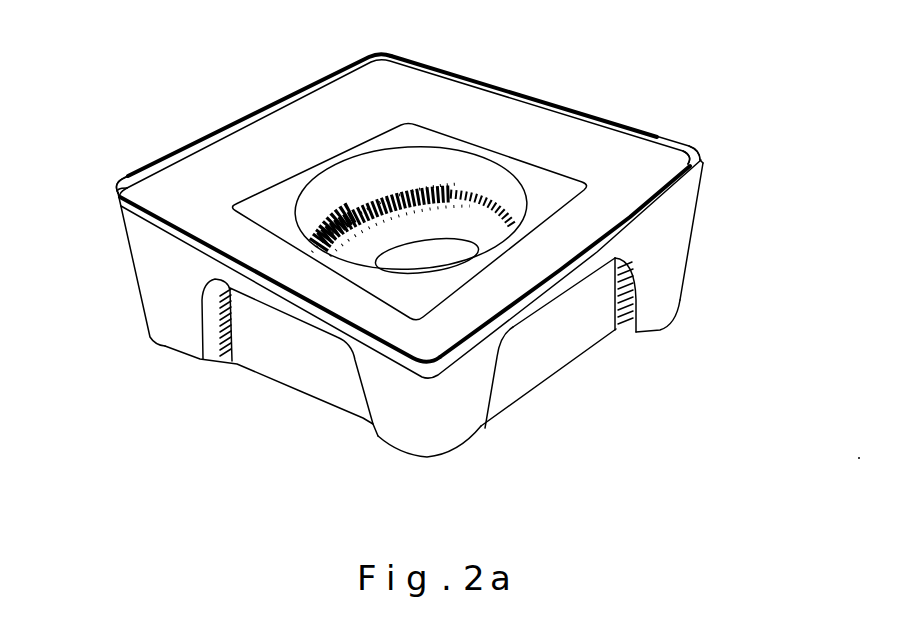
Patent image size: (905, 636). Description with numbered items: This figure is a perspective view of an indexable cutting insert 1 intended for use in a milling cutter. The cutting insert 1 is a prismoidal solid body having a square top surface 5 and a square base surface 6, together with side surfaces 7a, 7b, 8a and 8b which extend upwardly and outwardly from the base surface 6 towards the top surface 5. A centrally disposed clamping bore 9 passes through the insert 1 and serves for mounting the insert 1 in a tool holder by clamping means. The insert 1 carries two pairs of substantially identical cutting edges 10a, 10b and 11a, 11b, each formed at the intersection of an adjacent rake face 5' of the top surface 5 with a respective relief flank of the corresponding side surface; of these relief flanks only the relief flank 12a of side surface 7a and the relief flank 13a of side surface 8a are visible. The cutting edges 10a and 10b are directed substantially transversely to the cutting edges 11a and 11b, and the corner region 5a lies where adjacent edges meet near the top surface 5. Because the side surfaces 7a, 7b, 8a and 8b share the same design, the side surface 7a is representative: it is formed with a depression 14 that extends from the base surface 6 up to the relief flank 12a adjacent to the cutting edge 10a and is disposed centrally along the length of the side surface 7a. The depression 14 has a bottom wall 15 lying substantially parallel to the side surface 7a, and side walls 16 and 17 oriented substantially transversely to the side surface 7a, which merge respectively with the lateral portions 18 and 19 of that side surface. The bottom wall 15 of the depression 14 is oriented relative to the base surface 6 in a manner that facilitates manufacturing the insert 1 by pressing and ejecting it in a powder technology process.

The cutting insert 1 is at (685, 88).
The top surface 5 is at (410, 170).
The rake face 5' is at (321, 114).
The corner region of top surface 5a is at (645, 183).
The base surface 6 is at (172, 349).
The side surface 7a is at (667, 245).
The side surface 7b is at (267, 100).
The side surface 8a is at (153, 233).
The side surface 8b is at (543, 87).
The clamping bore 9 is at (393, 168).
The cutting edge 10a is at (643, 210).
The cutting edge 10b is at (225, 127).
The cutting edge 11a is at (207, 240).
The cutting edge 11b is at (598, 113).
The relief flank 12a is at (644, 218).
The relief flank 13a is at (210, 258).
The depression 14 is at (567, 375).
The bottom wall 15 is at (580, 328).
The side wall 16 is at (500, 373).
The side wall 17 is at (627, 332).
The lateral portion 18 is at (463, 402).
The lateral portion 19 is at (655, 297).